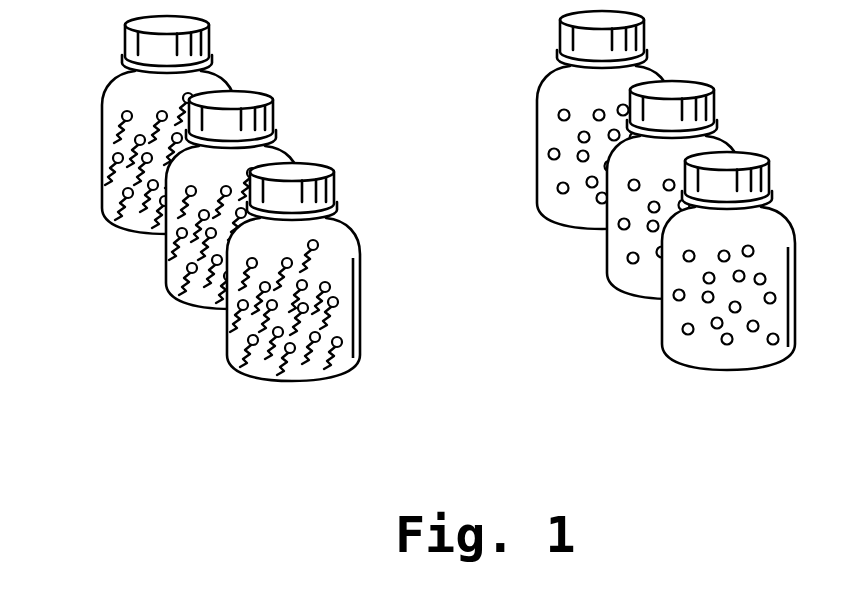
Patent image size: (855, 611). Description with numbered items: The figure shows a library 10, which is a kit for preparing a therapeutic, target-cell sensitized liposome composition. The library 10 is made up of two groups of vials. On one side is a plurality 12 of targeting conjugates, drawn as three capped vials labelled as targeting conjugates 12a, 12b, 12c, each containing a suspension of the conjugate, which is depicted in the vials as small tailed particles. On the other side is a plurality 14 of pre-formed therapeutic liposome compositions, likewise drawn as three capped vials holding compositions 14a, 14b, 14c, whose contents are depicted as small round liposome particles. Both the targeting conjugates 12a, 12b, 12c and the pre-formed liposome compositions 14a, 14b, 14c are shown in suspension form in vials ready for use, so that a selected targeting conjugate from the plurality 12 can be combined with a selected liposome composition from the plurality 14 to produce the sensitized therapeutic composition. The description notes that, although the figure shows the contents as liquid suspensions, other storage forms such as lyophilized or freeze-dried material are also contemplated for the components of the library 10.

The library 10 is at (735, 431).
The plurality of targeting conjugates 12 is at (188, 221).
The targeting conjugate 12a is at (233, 332).
The targeting conjugate 12b is at (188, 250).
The targeting conjugate 12c is at (110, 178).
The plurality of pre-formed therapeutic liposome compositions 14 is at (635, 226).
The pre-formed therapeutic liposome composition 14a is at (675, 337).
The pre-formed therapeutic liposome composition 14b is at (623, 258).
The pre-formed therapeutic liposome composition 14c is at (548, 182).